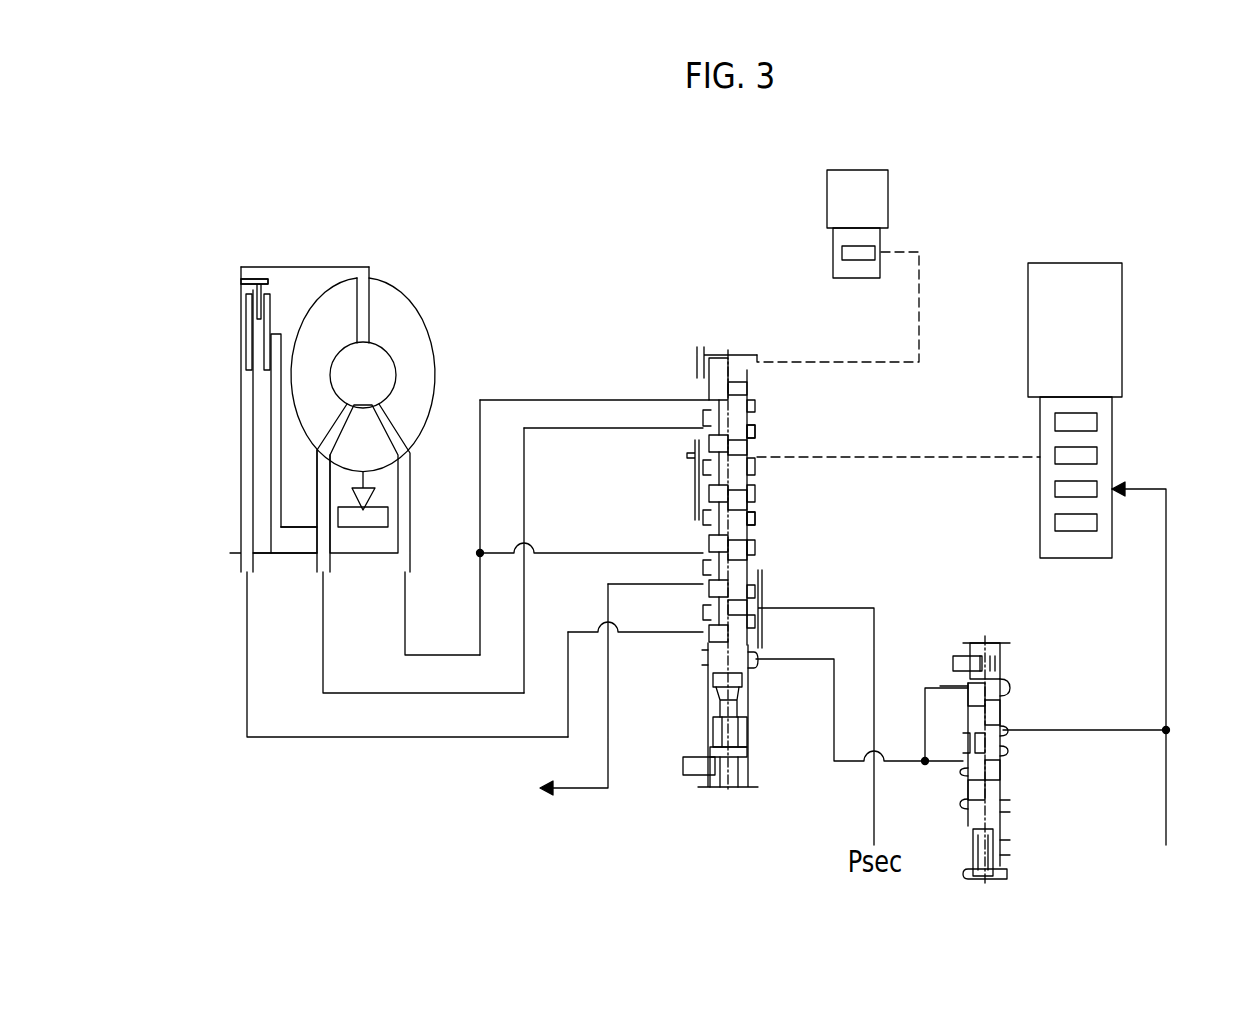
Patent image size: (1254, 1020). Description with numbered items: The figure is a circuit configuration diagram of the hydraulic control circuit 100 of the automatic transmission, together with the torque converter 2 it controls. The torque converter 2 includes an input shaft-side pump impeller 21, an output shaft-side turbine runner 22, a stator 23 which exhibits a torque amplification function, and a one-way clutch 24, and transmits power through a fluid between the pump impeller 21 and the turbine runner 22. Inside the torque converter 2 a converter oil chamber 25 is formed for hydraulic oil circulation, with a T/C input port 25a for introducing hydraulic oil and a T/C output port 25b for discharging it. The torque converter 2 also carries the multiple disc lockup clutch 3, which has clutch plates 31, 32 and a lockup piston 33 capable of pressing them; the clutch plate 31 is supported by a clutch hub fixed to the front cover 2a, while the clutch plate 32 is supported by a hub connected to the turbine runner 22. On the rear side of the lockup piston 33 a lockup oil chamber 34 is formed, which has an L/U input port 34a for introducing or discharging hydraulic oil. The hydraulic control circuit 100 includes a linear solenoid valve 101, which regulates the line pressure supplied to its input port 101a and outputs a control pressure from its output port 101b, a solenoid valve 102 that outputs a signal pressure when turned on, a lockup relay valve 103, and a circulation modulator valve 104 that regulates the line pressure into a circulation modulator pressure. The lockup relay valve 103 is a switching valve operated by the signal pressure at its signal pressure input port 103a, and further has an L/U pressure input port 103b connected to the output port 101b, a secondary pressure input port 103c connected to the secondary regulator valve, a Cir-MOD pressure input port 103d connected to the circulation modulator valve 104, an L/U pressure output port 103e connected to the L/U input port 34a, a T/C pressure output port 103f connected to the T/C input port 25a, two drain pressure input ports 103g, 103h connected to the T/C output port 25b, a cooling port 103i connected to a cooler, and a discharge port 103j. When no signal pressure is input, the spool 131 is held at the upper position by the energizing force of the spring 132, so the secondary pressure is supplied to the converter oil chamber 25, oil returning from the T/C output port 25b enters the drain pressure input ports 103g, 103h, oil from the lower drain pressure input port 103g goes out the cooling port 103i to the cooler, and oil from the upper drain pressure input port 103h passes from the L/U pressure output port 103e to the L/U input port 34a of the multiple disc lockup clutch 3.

The torque converter 2 is at (408, 260).
The front cover 2a is at (243, 448).
The multiple disc lockup clutch 3 is at (273, 292).
The pump impeller 21 is at (408, 310).
The turbine runner 22 is at (342, 292).
The stator 23 is at (368, 438).
The one-way clutch 24 is at (368, 497).
The converter oil chamber 25 is at (303, 283).
The T/C input port 25a is at (240, 563).
The T/C output port 25b is at (412, 563).
The clutch plate 31 is at (253, 287).
The clutch plate 32 is at (265, 347).
The lockup piston 33 is at (270, 418).
The lockup oil chamber 34 is at (295, 540).
The L/U input port 34a is at (330, 563).
The hydraulic control circuit 100 is at (697, 297).
The linear solenoid valve (SLU) 101 is at (1078, 260).
The input port 101a is at (1112, 490).
The output port 101b is at (1040, 457).
The solenoid valve (SL) 102 is at (895, 213).
The lockup relay valve 103 is at (685, 355).
The signal pressure input port 103a is at (757, 360).
The L/U pressure input port 103b is at (760, 440).
The secondary pressure input port 103c is at (758, 605).
The Cir-MOD pressure input port 103d is at (750, 663).
The L/U pressure output port 103e is at (695, 440).
The T/C pressure output port 103f is at (700, 637).
The drain pressure input port 103g is at (703, 545).
The drain pressure input port 103h is at (703, 400).
The cooling port 103i is at (700, 588).
The discharge port 103j is at (768, 530).
The circulation modulator valve 104 is at (1018, 680).
The spool 131 is at (737, 693).
The spring 132 is at (707, 728).